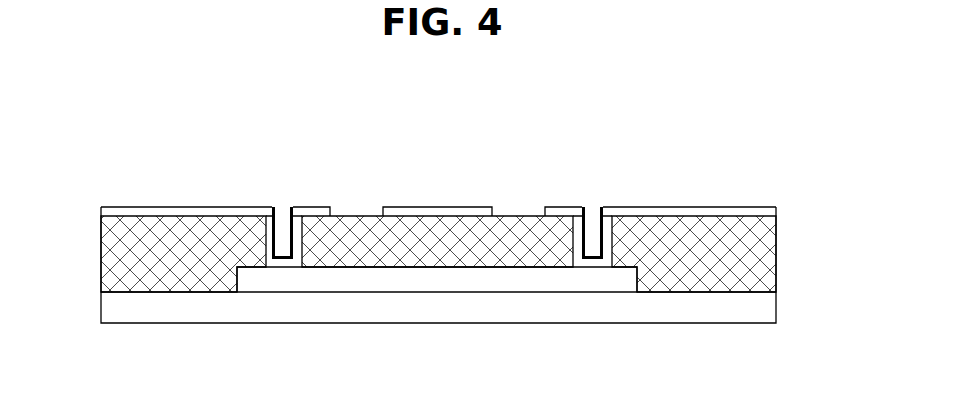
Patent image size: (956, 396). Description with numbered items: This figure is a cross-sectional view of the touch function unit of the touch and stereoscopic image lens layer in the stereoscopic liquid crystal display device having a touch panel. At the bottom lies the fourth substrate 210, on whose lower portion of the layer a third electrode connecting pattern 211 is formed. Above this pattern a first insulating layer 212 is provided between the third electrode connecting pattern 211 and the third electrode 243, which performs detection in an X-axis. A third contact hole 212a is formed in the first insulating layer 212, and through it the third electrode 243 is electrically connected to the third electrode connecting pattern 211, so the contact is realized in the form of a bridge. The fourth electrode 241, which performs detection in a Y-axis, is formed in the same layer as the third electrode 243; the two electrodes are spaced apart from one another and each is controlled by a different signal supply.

The fourth substrate 210 is at (397, 310).
The third electrode connecting pattern 211 is at (487, 280).
The first insulating layer 212 is at (358, 227).
The third contact hole 212a is at (282, 221).
The fourth electrode 241 is at (435, 211).
The third electrode 243 is at (687, 212).